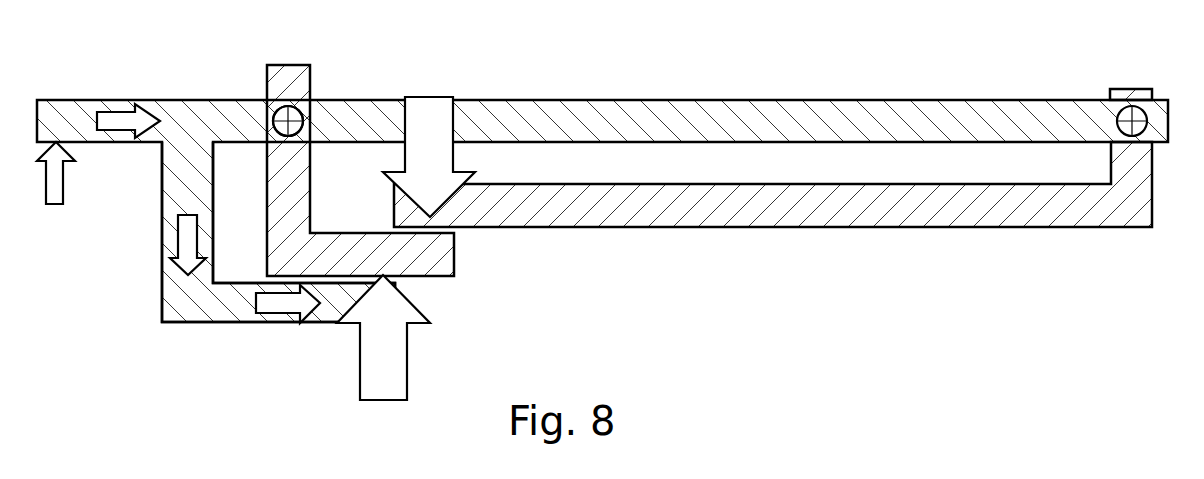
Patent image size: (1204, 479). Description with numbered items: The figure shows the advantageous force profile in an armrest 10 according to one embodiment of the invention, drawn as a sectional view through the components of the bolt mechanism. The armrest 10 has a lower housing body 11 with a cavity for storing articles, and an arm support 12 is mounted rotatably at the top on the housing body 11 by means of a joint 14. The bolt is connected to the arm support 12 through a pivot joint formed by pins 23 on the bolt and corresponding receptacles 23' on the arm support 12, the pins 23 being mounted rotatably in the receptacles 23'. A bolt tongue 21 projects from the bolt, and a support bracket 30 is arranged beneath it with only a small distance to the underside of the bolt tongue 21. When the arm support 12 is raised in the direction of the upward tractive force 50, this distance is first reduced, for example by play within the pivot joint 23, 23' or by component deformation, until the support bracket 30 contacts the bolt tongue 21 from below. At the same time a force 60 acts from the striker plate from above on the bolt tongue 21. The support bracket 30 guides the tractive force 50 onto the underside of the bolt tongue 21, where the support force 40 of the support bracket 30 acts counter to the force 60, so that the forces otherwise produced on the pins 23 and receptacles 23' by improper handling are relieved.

The armrest 10 is at (871, 78).
The lower housing body 11 is at (712, 209).
The arm support 12 is at (742, 118).
The joint 14 is at (1124, 108).
The bolt tongue 21 is at (438, 256).
The pins 23 is at (259, 74).
The receptacles 23' is at (288, 121).
The support bracket 30 is at (196, 302).
The support force 40 is at (394, 368).
The tractive force 50 is at (54, 206).
The force 60 is at (436, 122).